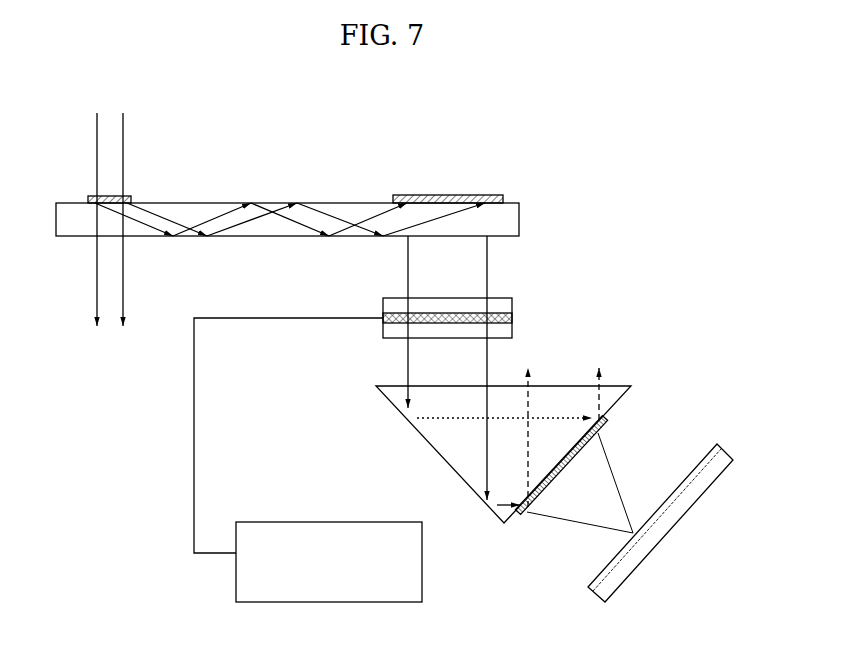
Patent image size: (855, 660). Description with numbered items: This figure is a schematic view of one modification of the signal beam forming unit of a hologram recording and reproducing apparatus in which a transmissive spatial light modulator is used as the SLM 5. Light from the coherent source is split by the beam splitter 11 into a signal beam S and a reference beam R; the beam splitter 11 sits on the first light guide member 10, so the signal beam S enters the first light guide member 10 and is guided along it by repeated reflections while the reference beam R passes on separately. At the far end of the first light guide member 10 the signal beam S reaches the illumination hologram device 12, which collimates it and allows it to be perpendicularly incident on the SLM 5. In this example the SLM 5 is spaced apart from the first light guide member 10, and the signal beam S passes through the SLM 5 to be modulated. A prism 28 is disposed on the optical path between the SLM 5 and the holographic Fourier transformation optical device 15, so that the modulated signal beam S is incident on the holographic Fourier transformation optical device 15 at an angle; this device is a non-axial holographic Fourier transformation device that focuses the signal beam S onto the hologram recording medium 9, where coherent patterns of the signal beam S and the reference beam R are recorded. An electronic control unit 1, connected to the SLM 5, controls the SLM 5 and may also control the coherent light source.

The electronic control unit 1 is at (422, 559).
The SLM 5 is at (512, 319).
The hologram recording medium 9 is at (710, 448).
The first light guide member 10 is at (67, 232).
The beam splitter 11 is at (90, 194).
The illumination hologram device 12 is at (446, 195).
The holographic Fourier transformation optical device 15 is at (607, 423).
The prism 28 is at (617, 387).
The reference beam R is at (123, 275).
The signal beam S is at (162, 217).